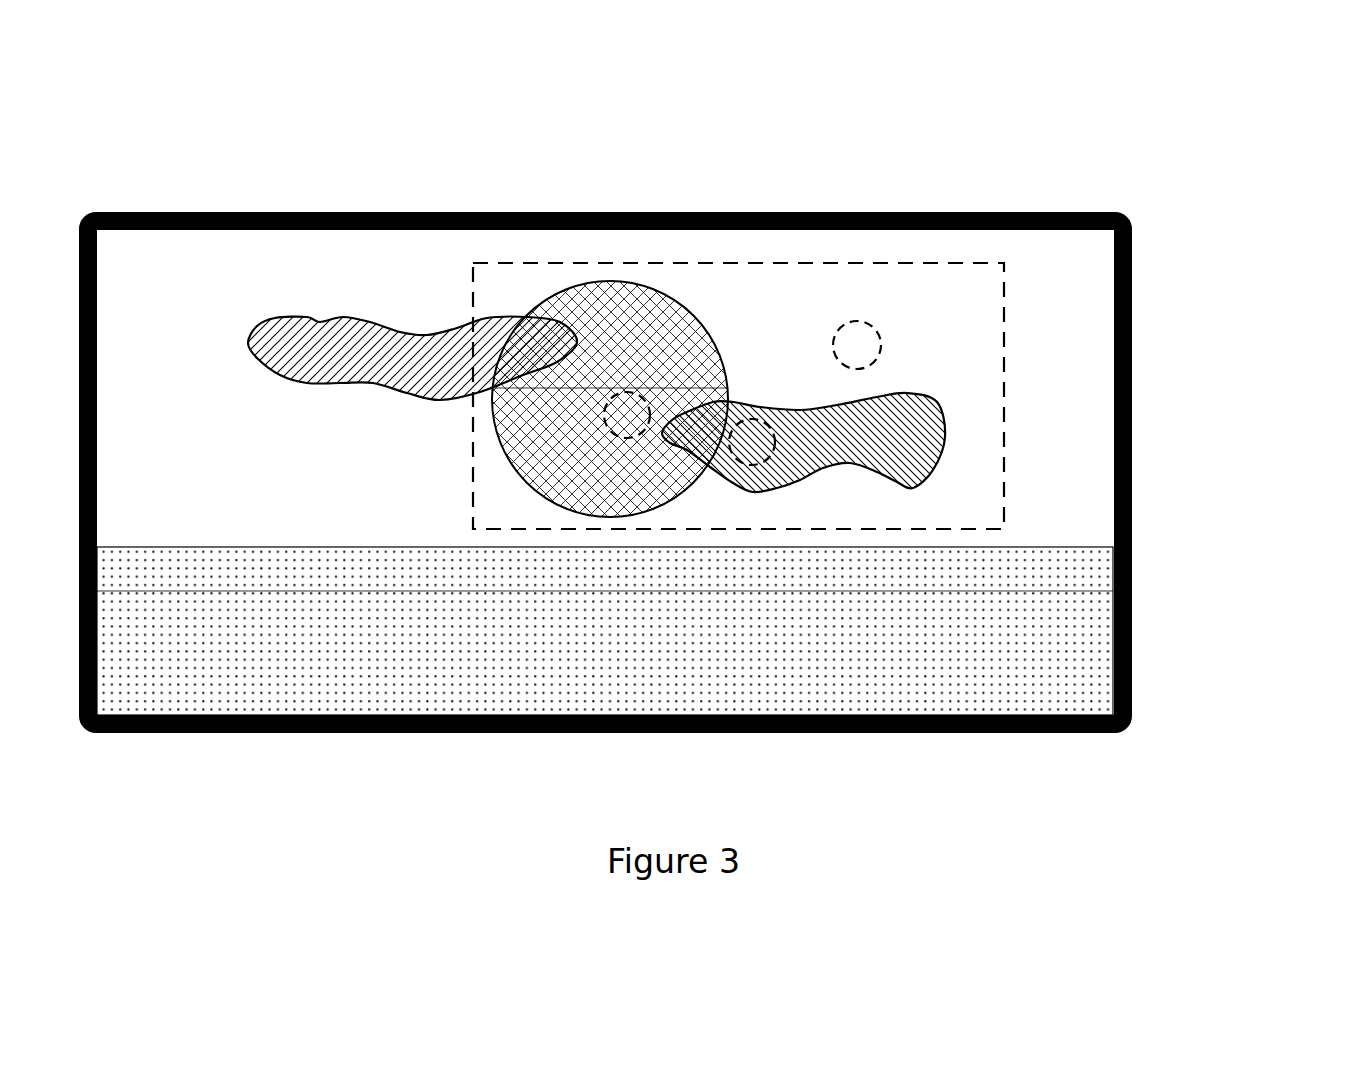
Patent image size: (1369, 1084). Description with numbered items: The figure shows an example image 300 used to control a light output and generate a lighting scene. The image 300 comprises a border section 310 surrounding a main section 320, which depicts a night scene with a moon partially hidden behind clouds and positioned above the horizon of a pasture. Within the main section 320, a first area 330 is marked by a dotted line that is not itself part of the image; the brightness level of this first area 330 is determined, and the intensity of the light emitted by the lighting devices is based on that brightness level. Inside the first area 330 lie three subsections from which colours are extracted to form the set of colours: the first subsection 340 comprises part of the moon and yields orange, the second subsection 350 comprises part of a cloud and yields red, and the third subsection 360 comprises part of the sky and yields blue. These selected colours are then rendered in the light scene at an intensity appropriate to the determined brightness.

The image 300 is at (1163, 143).
The border section 310 is at (1132, 295).
The main section 320 is at (1080, 370).
The first area 330 is at (1005, 427).
The first subsection 340 is at (627, 413).
The second subsection 350 is at (752, 442).
The third subsection 360 is at (858, 342).